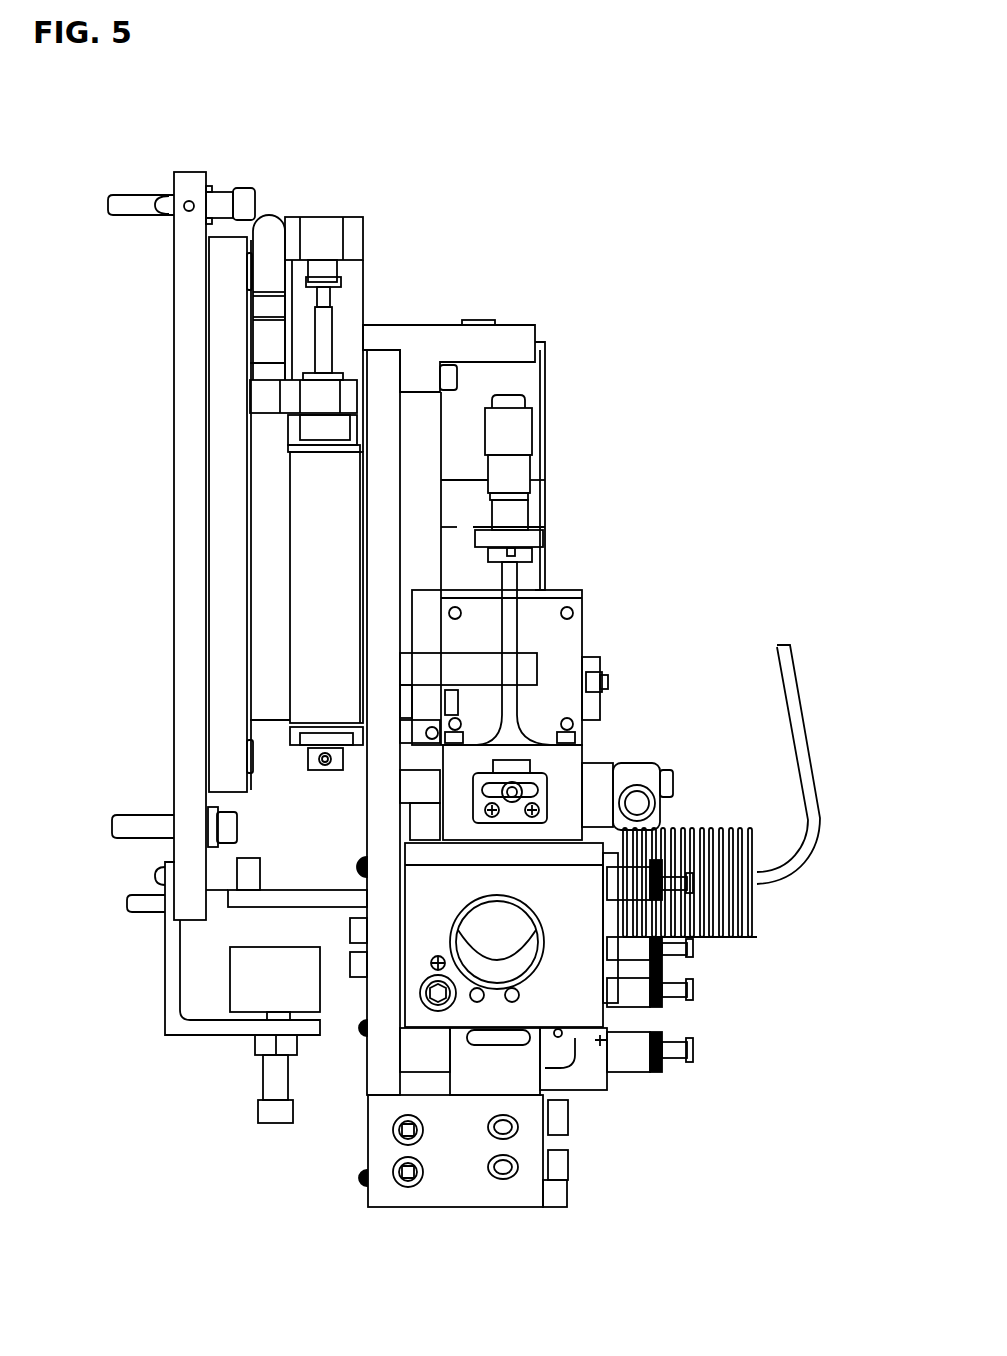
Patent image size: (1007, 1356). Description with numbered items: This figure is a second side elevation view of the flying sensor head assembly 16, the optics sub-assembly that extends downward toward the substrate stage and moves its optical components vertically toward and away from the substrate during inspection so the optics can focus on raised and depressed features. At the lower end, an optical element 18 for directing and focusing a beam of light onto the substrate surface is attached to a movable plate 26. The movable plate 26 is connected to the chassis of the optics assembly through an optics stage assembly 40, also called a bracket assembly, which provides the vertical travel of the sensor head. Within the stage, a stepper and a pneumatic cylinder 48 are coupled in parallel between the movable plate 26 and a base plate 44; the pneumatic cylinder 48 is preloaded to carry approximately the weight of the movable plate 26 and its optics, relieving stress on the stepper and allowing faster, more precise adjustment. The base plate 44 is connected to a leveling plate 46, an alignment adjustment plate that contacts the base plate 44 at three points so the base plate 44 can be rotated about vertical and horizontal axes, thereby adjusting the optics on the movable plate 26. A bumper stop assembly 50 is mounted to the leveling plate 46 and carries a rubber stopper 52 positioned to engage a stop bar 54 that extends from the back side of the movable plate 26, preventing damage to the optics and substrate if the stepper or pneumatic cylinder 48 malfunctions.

The flying sensor head assembly 16 is at (602, 197).
The optical element 18 is at (580, 905).
The movable plate 26 is at (382, 357).
The optics stage assembly 40 is at (368, 160).
The base plate 44 is at (220, 403).
The leveling plate 46 is at (183, 590).
The pneumatic cylinder 48 is at (337, 589).
The bumper stop assembly 50 is at (178, 1063).
The rubber stopper 52 is at (292, 992).
The stop bar 54 is at (313, 898).